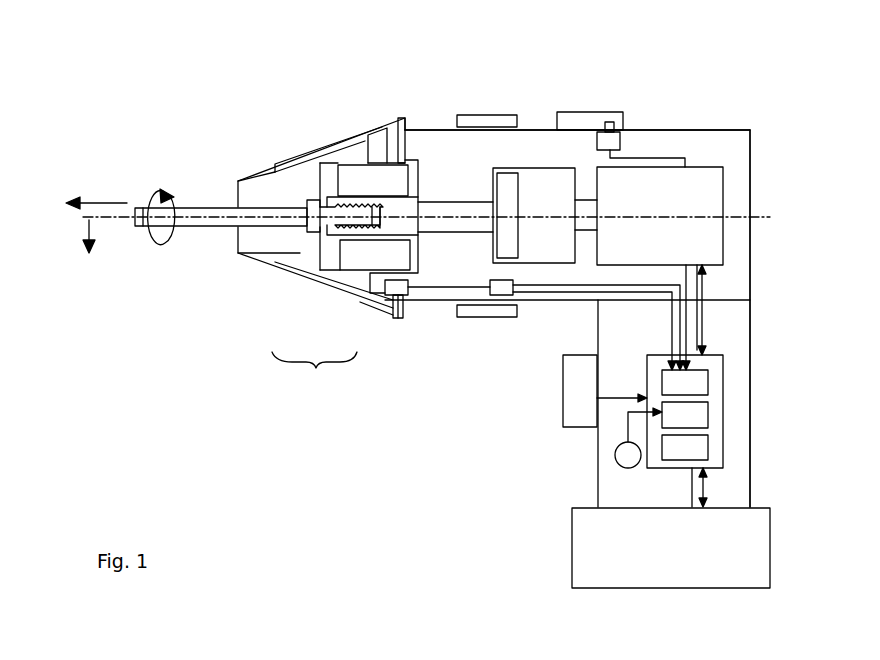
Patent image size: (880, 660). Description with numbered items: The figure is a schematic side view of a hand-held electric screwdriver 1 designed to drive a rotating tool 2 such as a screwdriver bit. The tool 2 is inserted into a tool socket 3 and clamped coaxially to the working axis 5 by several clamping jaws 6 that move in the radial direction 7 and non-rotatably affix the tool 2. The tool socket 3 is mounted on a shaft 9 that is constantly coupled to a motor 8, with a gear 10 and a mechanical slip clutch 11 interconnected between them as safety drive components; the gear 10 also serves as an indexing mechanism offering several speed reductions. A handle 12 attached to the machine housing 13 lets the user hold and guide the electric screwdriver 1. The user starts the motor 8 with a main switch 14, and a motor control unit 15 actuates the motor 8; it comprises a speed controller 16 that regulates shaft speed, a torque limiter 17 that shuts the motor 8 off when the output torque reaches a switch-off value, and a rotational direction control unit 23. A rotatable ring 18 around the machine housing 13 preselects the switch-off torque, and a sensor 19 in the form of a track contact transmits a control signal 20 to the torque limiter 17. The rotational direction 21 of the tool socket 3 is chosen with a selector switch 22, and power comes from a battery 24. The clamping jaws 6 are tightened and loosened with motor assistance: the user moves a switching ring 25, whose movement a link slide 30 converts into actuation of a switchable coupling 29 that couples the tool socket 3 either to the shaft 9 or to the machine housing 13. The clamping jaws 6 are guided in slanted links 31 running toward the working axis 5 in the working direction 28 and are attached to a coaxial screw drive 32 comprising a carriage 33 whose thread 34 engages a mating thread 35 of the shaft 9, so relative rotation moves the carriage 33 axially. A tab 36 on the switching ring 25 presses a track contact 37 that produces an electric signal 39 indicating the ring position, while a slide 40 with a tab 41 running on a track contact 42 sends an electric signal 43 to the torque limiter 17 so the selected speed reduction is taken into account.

The electric screwdriver 1 is at (200, 52).
The tool 2 is at (192, 224).
The tool socket 3 is at (330, 183).
The working axis 5 is at (127, 224).
The clamping jaws 6 is at (273, 243).
The radial direction 7 is at (86, 230).
The motor 8 is at (690, 160).
The shaft 9 is at (475, 207).
The gear 10 is at (530, 185).
The slip clutch 11 is at (505, 185).
The handle 12 is at (612, 498).
The machine housing 13 is at (727, 133).
The main switch 14 is at (575, 390).
The motor control unit 15 is at (728, 372).
The speed controller 16 is at (705, 450).
The torque limiter 17 is at (705, 378).
The rotatable ring 18 is at (485, 122).
The sensor 19 is at (497, 292).
The control signal 20 is at (580, 294).
The rotational direction 21 is at (155, 192).
The selector switch 22 is at (617, 455).
The rotational direction control unit 23 is at (705, 417).
The battery 24 is at (612, 550).
The switching ring 25 is at (375, 125).
The working direction 28 is at (93, 202).
The switchable coupling 29 is at (357, 183).
The link slide 30 is at (392, 142).
The links 31 is at (318, 160).
The screw drive 32 is at (314, 370).
The carriage 33 is at (310, 227).
The thread 34 is at (348, 222).
The mating thread 35 is at (367, 222).
The tab 36 is at (391, 305).
The track contact 37 is at (400, 292).
The electric signal 39 is at (425, 290).
The slide 40 is at (582, 122).
The tab 41 is at (609, 140).
The track contact 42 is at (617, 125).
The electric signal 43 is at (683, 187).